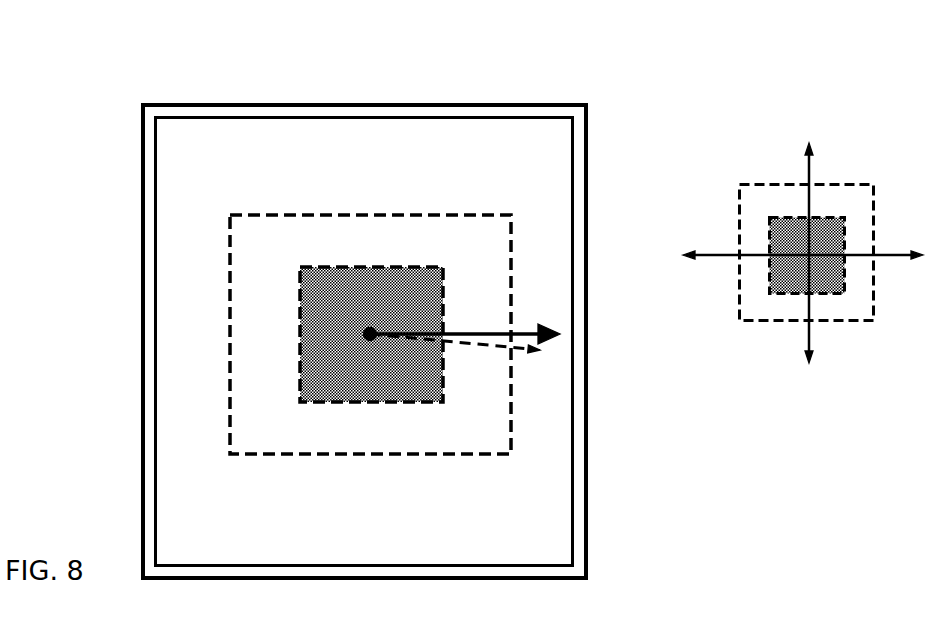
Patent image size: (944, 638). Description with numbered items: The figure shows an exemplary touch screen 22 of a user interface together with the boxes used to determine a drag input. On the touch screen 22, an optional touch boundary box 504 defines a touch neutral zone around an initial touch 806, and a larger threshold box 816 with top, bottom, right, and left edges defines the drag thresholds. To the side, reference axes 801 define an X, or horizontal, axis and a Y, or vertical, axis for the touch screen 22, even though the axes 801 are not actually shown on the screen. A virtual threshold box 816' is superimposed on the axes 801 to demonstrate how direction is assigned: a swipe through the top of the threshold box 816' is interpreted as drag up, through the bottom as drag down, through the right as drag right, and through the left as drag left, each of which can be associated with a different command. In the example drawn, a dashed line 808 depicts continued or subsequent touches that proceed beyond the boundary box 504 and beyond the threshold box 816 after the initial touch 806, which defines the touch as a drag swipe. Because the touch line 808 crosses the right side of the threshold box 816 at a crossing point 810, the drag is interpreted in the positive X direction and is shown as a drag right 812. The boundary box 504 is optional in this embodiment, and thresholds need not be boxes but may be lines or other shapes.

The touch screen 22 is at (142, 183).
The touch boundary box 504 is at (298, 310).
The initial touch 806 is at (370, 334).
The dashed line (touch line) 808 is at (458, 347).
The crossing point 810 is at (513, 351).
The drag right 812 is at (525, 334).
The threshold box 816 is at (274, 334).
The virtual threshold box 816' is at (783, 279).
The reference axes 801 is at (789, 309).